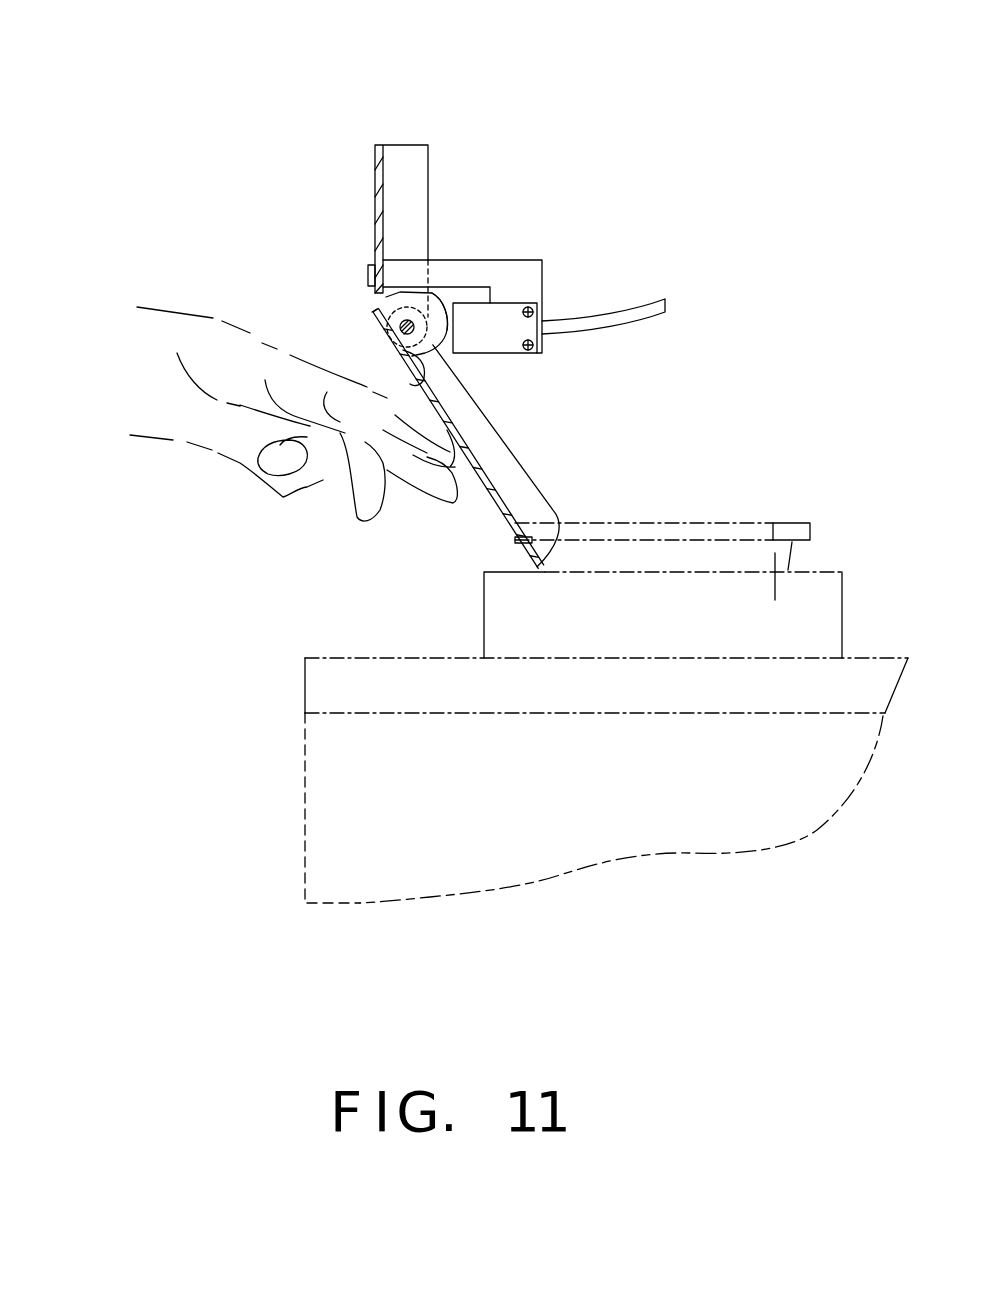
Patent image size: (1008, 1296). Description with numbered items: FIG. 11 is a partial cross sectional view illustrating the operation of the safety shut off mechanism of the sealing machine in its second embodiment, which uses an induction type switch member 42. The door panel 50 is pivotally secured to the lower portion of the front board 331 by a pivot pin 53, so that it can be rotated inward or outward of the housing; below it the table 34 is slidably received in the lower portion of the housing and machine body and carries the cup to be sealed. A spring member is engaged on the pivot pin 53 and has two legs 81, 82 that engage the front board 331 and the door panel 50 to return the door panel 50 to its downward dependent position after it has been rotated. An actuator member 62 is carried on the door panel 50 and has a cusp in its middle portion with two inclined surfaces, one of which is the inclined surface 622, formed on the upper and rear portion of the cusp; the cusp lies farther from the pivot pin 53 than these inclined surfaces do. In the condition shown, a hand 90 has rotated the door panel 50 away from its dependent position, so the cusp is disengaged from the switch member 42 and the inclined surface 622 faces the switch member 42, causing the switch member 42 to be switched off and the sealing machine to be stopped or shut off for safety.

The front board 331 is at (373, 173).
The operator's hand 90 is at (168, 300).
The leg 81 is at (386, 280).
The pivot pin 53 is at (374, 322).
The switch member 42 is at (505, 307).
The leg 82 is at (415, 383).
The inclined surface 622 is at (443, 327).
The actuator member 62 is at (433, 343).
The table 34 is at (776, 553).
The door panel 50 is at (485, 505).